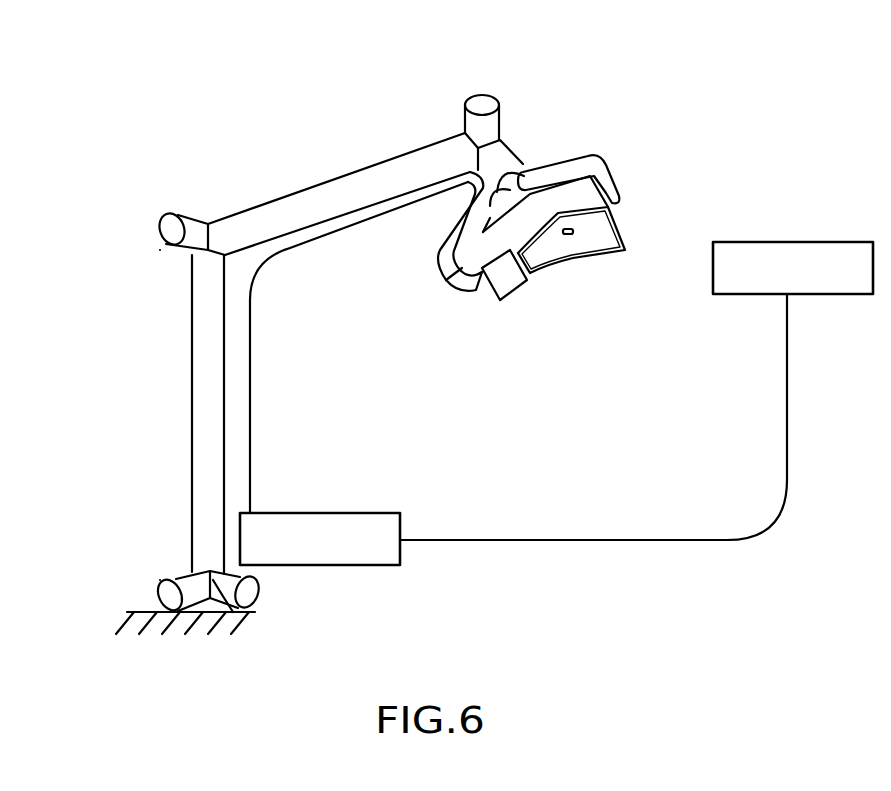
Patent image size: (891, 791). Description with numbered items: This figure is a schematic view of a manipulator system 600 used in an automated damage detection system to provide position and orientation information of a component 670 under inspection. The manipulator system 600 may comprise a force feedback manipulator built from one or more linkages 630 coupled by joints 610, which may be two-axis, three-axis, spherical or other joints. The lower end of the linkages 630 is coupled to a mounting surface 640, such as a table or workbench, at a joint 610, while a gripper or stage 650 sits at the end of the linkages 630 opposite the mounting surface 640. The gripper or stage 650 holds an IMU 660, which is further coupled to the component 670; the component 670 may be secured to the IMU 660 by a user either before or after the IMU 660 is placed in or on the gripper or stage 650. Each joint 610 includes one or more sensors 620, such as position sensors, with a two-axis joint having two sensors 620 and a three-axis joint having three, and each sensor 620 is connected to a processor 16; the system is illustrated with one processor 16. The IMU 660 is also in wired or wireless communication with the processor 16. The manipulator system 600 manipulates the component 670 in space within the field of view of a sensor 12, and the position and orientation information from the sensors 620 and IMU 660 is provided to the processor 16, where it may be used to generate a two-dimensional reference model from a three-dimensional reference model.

The manipulator system 600 is at (256, 71).
The joint 610 is at (439, 101).
The sensor 620 is at (233, 614).
The linkage 630 is at (322, 184).
The mounting surface 640 is at (133, 611).
The gripper or stage 650 is at (624, 186).
The IMU 660 is at (508, 293).
The component 670 is at (597, 258).
The processor 16 is at (393, 565).
The sensor 12 is at (848, 242).